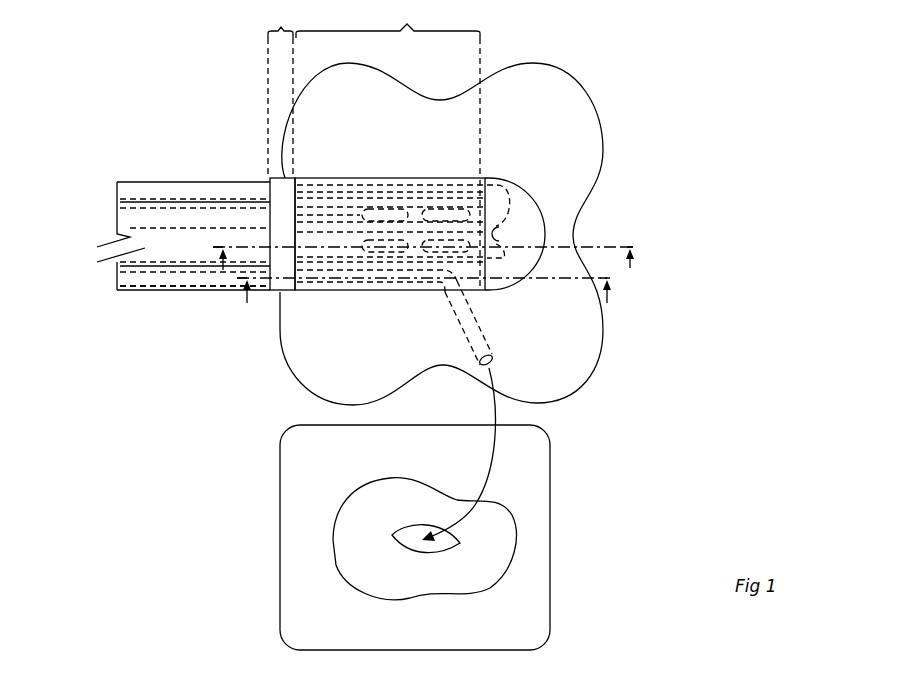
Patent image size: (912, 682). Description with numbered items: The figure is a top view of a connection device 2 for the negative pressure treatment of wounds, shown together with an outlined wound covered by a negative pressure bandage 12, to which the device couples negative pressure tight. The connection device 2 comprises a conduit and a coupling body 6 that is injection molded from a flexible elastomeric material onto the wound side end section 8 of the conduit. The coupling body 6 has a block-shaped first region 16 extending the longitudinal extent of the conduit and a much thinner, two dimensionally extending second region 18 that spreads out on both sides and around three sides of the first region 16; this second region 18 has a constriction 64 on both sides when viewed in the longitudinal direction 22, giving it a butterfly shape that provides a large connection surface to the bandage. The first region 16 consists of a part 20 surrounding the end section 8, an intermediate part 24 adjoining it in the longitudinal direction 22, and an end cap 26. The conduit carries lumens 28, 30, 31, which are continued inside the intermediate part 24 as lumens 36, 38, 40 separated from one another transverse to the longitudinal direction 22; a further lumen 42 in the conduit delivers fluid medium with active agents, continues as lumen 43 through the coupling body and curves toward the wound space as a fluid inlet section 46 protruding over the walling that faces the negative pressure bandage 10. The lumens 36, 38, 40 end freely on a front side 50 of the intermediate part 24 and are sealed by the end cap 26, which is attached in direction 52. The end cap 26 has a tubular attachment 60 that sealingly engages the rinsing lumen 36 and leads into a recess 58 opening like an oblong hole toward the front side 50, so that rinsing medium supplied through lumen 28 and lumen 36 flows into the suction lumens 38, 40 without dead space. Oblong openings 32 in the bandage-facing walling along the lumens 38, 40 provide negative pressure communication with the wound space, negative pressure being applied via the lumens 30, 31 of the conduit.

The connection device 2 is at (367, 325).
The coupling body 6 is at (238, 120).
The wound side end section 8 is at (275, 186).
The negative pressure bandage 10 is at (493, 533).
The negative pressure bandage 12 is at (527, 602).
The first region 16 is at (370, 292).
The second region 18 is at (326, 378).
The part 20 is at (281, 92).
The intermediate part 24 is at (388, 89).
The longitudinal direction 22 is at (95, 228).
The end cap 26 is at (517, 210).
The lumen 28 is at (152, 190).
The lumen 30 is at (130, 218).
The lumen 31 is at (143, 248).
The openings 32 is at (398, 216).
The lumen 36 is at (383, 193).
The lumen 38 is at (343, 213).
The lumen 40 is at (310, 247).
The further lumen 42 is at (162, 280).
The lumen 43 is at (397, 288).
The fluid inlet section 46 is at (480, 338).
The front side 50 is at (488, 268).
The direction 52 is at (623, 232).
The recess 58 is at (502, 240).
The tubular attachment 60 is at (482, 182).
The constriction 64 is at (404, 89).